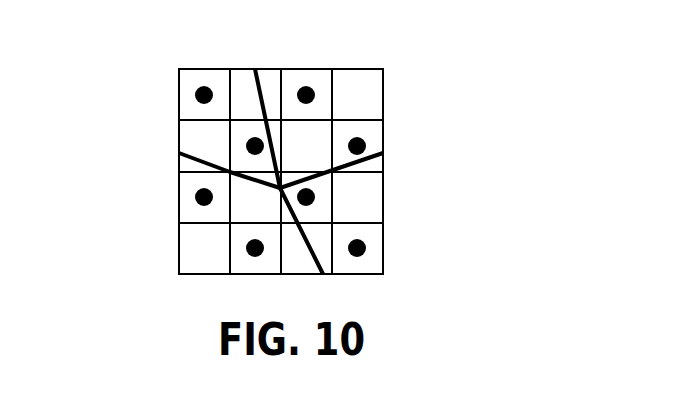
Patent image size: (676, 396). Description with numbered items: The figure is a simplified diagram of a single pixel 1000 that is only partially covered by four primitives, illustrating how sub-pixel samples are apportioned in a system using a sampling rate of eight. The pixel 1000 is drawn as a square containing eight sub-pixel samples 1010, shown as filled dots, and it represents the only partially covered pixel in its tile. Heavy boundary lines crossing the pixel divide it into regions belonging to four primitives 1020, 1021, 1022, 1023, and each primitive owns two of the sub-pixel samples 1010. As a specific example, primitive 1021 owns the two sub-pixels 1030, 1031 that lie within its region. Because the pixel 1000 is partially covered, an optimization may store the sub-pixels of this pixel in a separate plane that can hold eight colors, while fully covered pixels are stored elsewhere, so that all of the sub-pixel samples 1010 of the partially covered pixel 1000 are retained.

The pixel 1000 is at (326, 42).
The primitive 1020 is at (368, 95).
The primitive 1022 is at (215, 143).
The primitive 1023 is at (213, 237).
The sub-pixel samples 1010 is at (366, 146).
The sub-pixel 1030 is at (307, 191).
The primitive 1021 is at (348, 217).
The sub-pixel 1031 is at (365, 248).